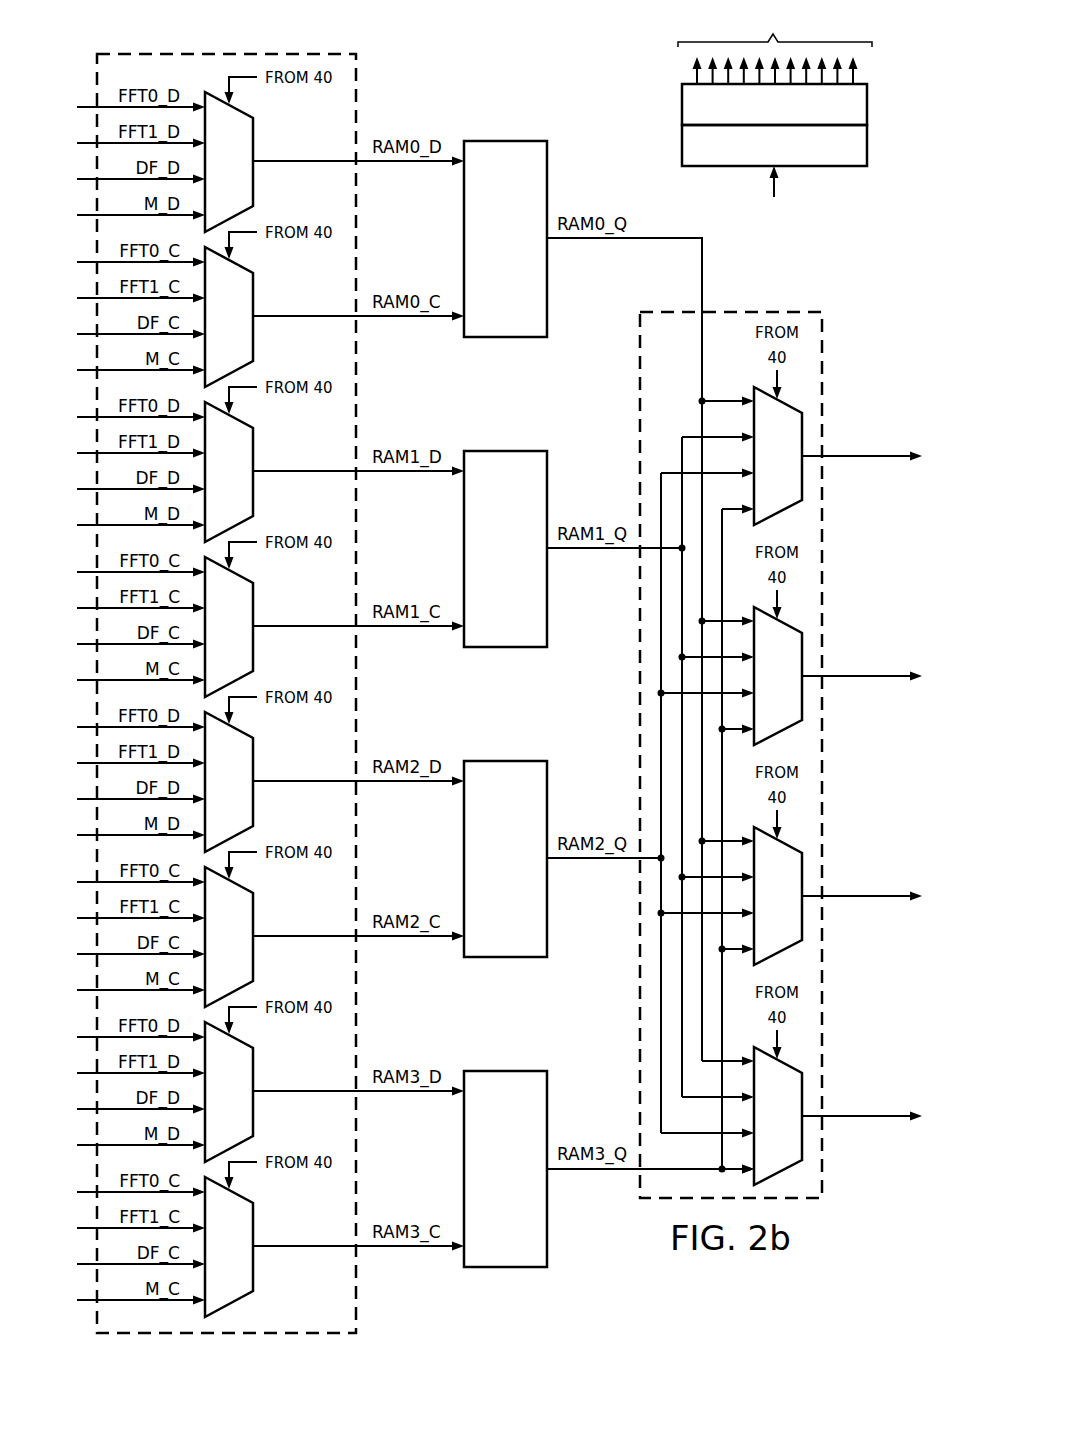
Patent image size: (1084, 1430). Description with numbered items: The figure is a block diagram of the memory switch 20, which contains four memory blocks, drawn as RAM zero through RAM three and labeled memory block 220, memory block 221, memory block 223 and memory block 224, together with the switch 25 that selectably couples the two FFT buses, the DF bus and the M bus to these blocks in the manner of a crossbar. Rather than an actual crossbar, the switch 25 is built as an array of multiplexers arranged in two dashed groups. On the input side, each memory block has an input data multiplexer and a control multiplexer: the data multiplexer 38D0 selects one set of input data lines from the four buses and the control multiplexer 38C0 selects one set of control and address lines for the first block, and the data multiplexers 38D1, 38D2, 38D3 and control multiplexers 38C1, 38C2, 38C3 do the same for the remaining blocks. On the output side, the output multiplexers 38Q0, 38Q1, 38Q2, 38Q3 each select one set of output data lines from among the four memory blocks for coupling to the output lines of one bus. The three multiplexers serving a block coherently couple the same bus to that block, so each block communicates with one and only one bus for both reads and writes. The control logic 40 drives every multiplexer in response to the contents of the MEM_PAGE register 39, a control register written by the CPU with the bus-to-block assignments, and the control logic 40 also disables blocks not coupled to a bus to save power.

The memory switch 20 is at (597, 66).
The switch 25 is at (369, 667).
The memory block 220 is at (505, 140).
The memory block 221 is at (505, 450).
The memory block 223 is at (507, 958).
The RAM_3 memory block 224 is at (507, 1268).
The input data multiplexer 38D0 is at (255, 137).
The control multiplexer 38C0 is at (255, 292).
The input data multiplexer 38D1 is at (255, 447).
The control multiplexer 38C1 is at (255, 602).
The input data multiplexer 38D2 is at (255, 757).
The control multiplexer 38C2 is at (255, 912).
The input data multiplexer 38D3 is at (255, 1067).
The control multiplexer 38C3 is at (255, 1222).
The output multiplexer 38Q0 is at (802, 483).
The output multiplexer 38Q1 is at (802, 703).
The output multiplexer 38Q2 is at (802, 923).
The output multiplexer 38Q3 is at (802, 1143).
The MEM_PAGE register 39 is at (867, 147).
The control logic 40 is at (867, 107).